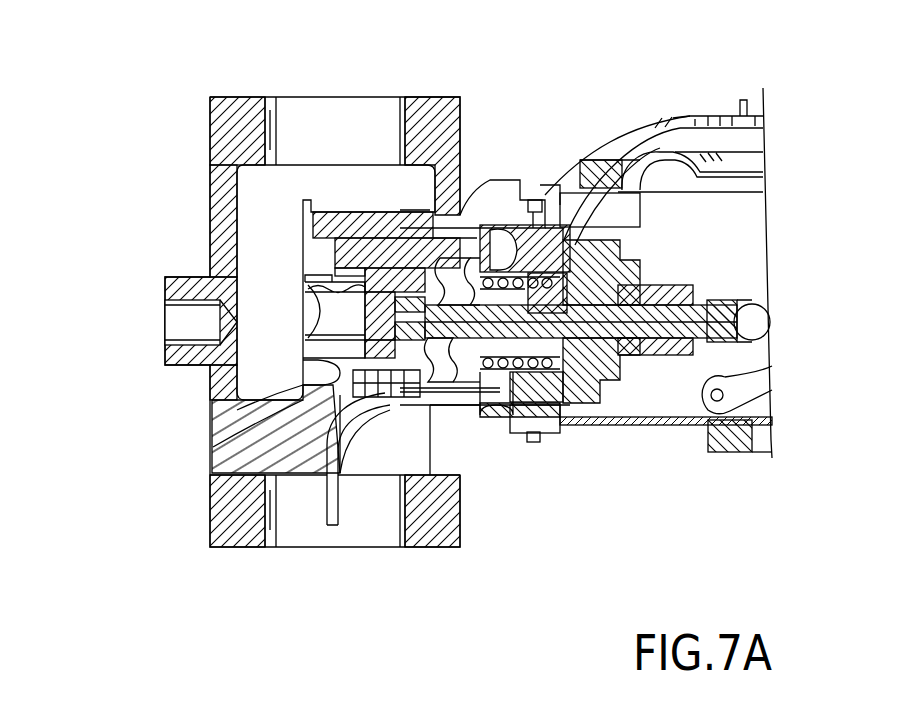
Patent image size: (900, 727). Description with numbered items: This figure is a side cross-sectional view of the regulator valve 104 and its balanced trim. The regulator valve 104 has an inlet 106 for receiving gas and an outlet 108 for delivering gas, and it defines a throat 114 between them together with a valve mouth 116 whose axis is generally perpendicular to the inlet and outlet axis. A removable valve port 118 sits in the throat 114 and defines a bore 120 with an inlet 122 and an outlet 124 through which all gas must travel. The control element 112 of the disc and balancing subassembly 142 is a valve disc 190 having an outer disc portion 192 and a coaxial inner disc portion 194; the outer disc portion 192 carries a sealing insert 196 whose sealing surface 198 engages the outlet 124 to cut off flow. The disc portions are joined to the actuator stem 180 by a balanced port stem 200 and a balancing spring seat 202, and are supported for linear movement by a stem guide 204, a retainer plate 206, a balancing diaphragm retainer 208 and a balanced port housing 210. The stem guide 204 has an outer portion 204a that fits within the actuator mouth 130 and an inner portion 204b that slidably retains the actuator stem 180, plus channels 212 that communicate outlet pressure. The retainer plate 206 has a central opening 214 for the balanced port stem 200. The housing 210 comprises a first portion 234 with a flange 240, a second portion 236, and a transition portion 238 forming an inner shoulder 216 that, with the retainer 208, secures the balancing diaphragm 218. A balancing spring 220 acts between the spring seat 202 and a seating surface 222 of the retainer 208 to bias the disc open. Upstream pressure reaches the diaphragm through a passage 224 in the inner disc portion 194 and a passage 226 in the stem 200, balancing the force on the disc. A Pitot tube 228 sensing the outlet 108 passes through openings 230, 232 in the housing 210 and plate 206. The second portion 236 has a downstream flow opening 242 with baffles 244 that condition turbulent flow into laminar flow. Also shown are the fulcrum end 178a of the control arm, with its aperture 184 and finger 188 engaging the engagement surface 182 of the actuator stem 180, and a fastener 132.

The regulator valve 104 is at (464, 94).
The inlet 106 is at (272, 150).
The outlet 108 is at (277, 520).
The control element 112 is at (375, 268).
The throat 114 is at (330, 412).
The valve mouth 116 is at (497, 440).
The valve port 118 is at (308, 298).
The bore 120 is at (303, 362).
The inlet 122 is at (236, 322).
The outlet 124 is at (300, 378).
The actuator mouth 130 is at (580, 428).
The fastener 132 is at (557, 463).
The disc and balancing subassembly 142 is at (652, 472).
The fulcrum end 178a is at (757, 378).
The actuator stem 180 is at (767, 288).
The engagement surface 182 is at (725, 318).
The aperture 184 is at (755, 423).
The finger 188 is at (770, 324).
The valve disc 190 is at (380, 325).
The outer disc portion 192 is at (384, 275).
The inner disc portion 194 is at (290, 395).
The sealing insert 196 is at (332, 282).
The sealing surface 198 is at (310, 278).
The balanced port stem 200 is at (640, 125).
The balancing spring seat 202 is at (618, 195).
The stem guide 204 is at (680, 300).
The outer portion 204a is at (600, 400).
The inner portion 204b is at (705, 280).
The retainer plate 206 is at (557, 190).
The balancing diaphragm retainer 208 is at (443, 533).
The balanced port housing 210 is at (370, 262).
The channels 212 is at (640, 283).
The central opening 214 is at (603, 195).
The inner shoulder 216 is at (450, 232).
The balancing diaphragm 218 is at (415, 375).
The balancing spring 220 is at (550, 412).
The seating surface 222 is at (545, 450).
The passage 224 is at (503, 422).
The passage 226 is at (445, 530).
The Pitot tube 228 is at (327, 488).
The opening 230 is at (500, 410).
The opening 232 is at (507, 417).
The first portion 234 is at (465, 255).
The second portion 236 is at (350, 268).
The transition portion 238 is at (458, 245).
The flange 240 is at (484, 270).
The downstream flow opening 242 is at (300, 468).
The baffles 244 is at (395, 412).